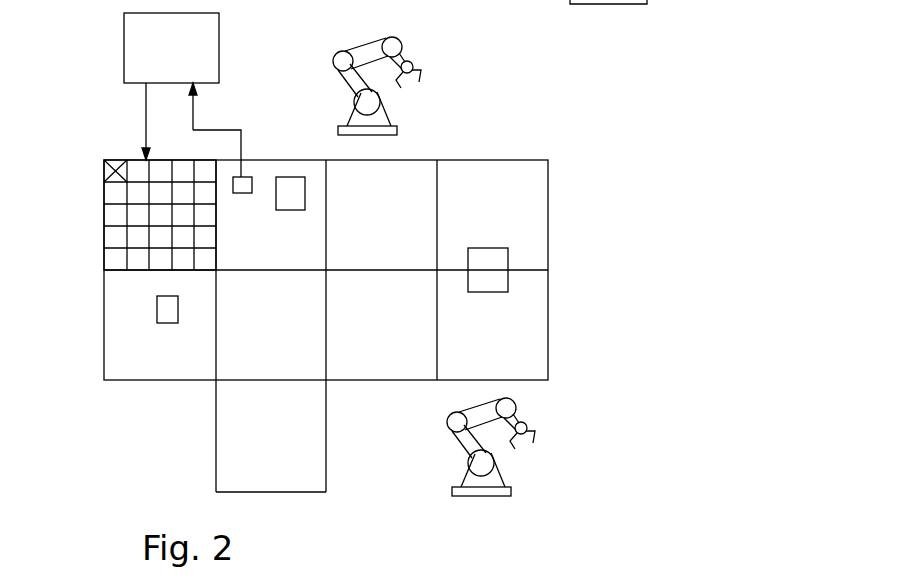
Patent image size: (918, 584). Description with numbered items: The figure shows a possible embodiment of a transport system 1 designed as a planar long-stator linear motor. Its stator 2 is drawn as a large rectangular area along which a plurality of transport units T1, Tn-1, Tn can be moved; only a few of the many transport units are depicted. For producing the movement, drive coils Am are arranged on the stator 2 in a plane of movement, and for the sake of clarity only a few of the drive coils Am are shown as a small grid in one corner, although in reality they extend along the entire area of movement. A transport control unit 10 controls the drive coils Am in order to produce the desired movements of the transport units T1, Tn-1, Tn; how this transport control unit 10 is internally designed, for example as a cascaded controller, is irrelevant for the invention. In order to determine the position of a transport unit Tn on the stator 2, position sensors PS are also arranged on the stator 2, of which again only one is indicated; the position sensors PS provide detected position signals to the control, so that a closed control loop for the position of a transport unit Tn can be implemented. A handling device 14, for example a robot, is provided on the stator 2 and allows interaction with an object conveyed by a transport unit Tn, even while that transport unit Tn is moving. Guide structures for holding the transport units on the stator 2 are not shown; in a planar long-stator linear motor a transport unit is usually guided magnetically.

The transport system 1 is at (487, 115).
The stator 2 is at (88, 187).
The transport control unit 10 is at (182, 95).
The handling device 14 is at (500, 474).
The drive coils Am is at (123, 172).
The position sensors PS is at (243, 180).
The transport unit T1 is at (305, 192).
The transport unit Tn-1 is at (488, 263).
The transport unit Tn is at (167, 323).